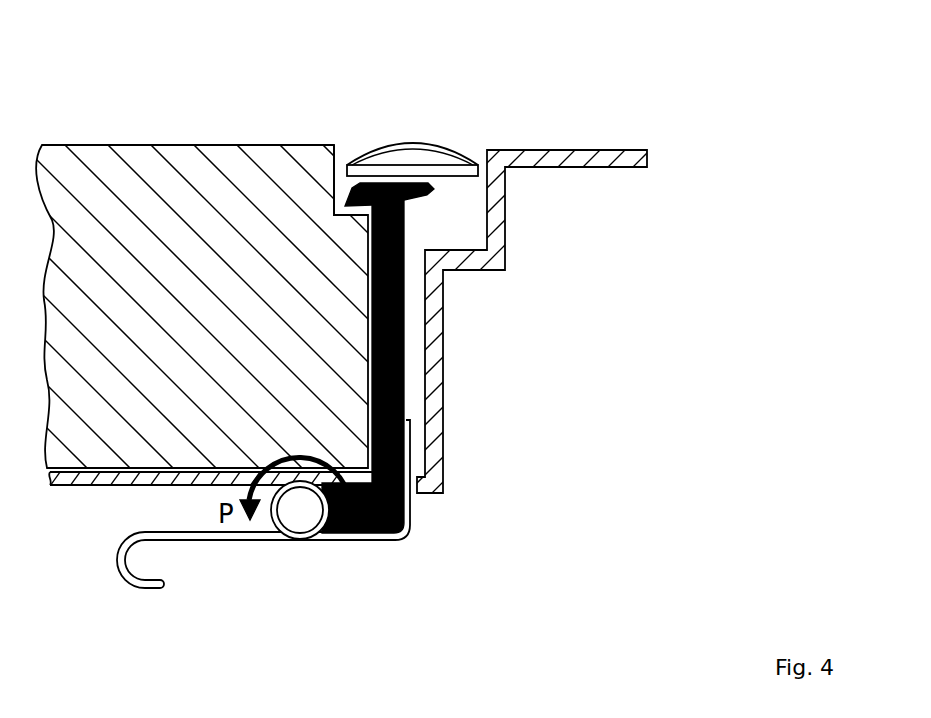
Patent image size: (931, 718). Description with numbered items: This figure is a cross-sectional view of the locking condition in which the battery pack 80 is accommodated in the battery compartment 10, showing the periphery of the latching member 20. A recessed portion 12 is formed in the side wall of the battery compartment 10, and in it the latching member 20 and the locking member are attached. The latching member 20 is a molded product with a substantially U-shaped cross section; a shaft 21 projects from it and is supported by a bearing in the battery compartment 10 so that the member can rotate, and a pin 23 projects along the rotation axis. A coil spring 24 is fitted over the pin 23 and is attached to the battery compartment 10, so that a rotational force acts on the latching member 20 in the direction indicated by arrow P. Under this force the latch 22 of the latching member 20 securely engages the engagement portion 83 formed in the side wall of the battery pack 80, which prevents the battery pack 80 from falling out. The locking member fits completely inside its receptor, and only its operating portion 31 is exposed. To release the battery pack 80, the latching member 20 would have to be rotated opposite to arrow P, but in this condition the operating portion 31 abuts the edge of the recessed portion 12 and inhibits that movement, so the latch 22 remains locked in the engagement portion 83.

The battery compartment 10 is at (90, 486).
The recessed portion 12 is at (480, 155).
The latching member 20 is at (388, 340).
The shaft 21 is at (334, 537).
The latch 22 is at (350, 165).
The pin 23 is at (305, 517).
The coil spring 24 is at (200, 540).
The operating portion 31 is at (423, 158).
The battery pack 80 is at (127, 157).
The engagement portion 83 is at (328, 189).